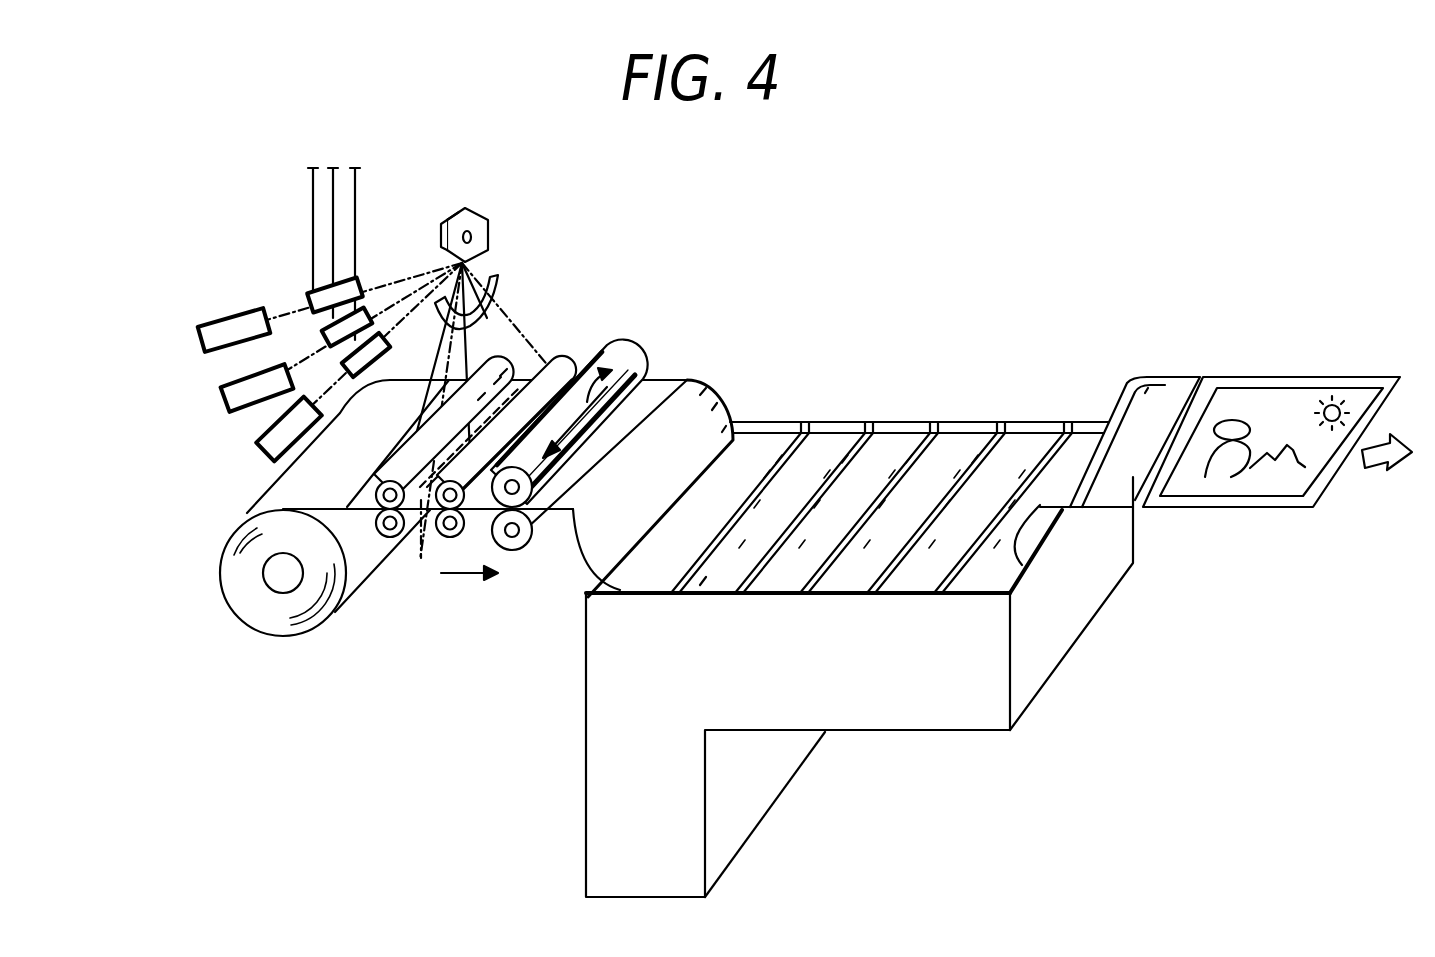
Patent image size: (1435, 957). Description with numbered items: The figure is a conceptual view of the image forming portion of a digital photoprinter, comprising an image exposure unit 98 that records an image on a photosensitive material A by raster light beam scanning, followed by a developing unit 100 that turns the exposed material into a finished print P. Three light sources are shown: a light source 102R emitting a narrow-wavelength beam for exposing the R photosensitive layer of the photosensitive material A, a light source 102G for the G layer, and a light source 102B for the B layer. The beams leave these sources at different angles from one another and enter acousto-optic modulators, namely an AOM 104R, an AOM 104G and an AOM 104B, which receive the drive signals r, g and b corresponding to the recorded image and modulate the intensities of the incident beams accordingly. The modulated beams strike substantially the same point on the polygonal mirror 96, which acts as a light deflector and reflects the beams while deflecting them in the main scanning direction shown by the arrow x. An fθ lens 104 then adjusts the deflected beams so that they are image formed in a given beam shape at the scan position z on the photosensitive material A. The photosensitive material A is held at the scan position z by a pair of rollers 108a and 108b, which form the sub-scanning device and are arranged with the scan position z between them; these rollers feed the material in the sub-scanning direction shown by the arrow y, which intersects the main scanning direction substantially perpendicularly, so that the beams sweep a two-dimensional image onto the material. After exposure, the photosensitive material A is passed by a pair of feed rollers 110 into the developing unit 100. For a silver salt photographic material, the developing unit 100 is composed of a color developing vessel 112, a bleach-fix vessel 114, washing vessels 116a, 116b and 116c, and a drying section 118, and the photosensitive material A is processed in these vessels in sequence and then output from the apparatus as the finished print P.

The polygonal mirror 96 is at (484, 226).
The image exposure unit 98 is at (405, 625).
The developing unit 100 is at (1038, 366).
The light source 102R is at (205, 337).
The light source 102G is at (225, 402).
The light source 102B is at (265, 452).
The fθ lens 104 is at (494, 290).
The AOM 104R is at (306, 303).
The AOM 104G is at (326, 335).
The AOM 104B is at (385, 337).
The roller 108a is at (383, 537).
The roller 108b is at (550, 358).
The feed rollers 110 is at (513, 551).
The color developing vessel 112 is at (768, 440).
The bleach-fix vessel 114 is at (700, 587).
The washing vessel 116a is at (888, 440).
The washing vessel 116b is at (838, 587).
The washing vessel 116c is at (922, 587).
The drying section 118 is at (993, 597).
The photosensitive material A is at (658, 392).
The finished print P is at (1240, 508).
The drive signal r is at (313, 200).
The drive signal g is at (333, 172).
The drive signal b is at (357, 192).
The main scanning direction x is at (615, 362).
The sub-scanning direction y is at (469, 585).
The scan position z is at (416, 543).